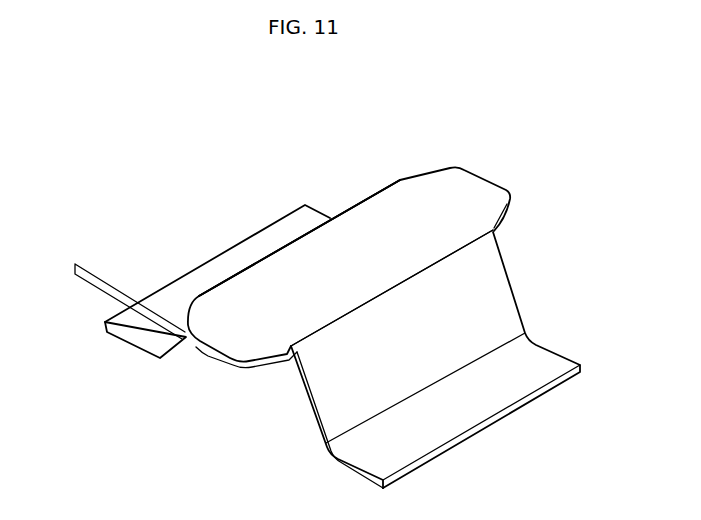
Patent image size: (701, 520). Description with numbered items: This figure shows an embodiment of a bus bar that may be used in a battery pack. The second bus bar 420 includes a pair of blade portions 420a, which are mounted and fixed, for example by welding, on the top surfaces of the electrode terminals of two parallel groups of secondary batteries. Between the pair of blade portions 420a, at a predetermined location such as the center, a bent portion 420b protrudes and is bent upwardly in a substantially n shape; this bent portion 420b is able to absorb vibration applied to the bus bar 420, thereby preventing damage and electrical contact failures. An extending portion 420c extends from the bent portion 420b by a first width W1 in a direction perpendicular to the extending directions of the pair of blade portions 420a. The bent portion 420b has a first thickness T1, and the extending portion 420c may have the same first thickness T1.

The second bus bar 420 is at (520, 133).
The blade portions 420a is at (248, 252).
The bent portion 420b is at (380, 223).
The extending portion 420c is at (228, 335).
The first thickness T1 is at (73, 307).
The first width W1 is at (510, 197).